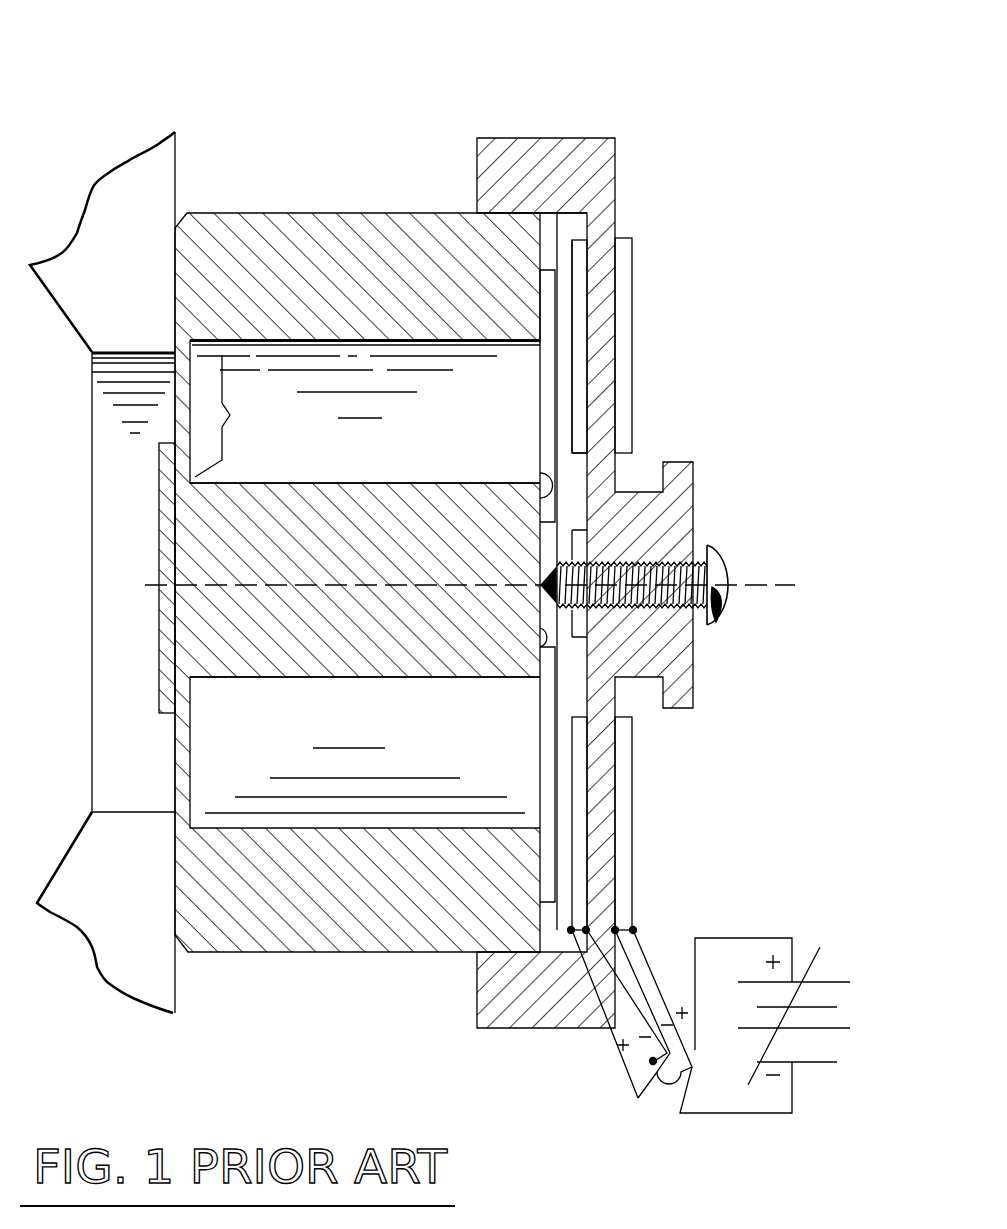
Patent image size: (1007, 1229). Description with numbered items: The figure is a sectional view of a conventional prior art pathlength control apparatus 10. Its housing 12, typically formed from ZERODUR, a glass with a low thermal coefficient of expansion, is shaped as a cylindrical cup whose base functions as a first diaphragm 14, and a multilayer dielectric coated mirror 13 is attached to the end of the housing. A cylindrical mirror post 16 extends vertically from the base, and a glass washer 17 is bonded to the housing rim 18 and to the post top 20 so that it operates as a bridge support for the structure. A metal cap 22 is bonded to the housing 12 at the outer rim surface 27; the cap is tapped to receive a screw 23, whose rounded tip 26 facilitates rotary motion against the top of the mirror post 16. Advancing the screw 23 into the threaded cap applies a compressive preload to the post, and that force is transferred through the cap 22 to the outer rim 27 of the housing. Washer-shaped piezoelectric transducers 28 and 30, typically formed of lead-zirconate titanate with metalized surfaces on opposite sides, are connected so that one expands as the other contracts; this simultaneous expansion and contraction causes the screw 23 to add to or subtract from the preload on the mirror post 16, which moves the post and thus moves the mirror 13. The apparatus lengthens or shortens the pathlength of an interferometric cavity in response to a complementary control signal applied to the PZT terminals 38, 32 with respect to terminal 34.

The pathlength control apparatus 10 is at (307, 140).
The housing 12 is at (272, 213).
The multilayer dielectric coated mirror 13 is at (165, 625).
The first diaphragm 14 is at (365, 409).
The mirror post 16 is at (380, 617).
The glass washer 17 is at (548, 388).
The housing rim 18 is at (540, 312).
The post top 20 is at (540, 470).
The metal cap 22 is at (558, 150).
The screw 23 is at (712, 556).
The rounded tip 26 is at (560, 600).
The outer rim surface 27 is at (500, 213).
The piezoelectric transducer 28 is at (578, 264).
The piezoelectric transducer 30 is at (626, 303).
The PZT terminal 32 is at (572, 930).
The PZT terminal 34 is at (585, 930).
The PZT terminal 38 is at (633, 930).